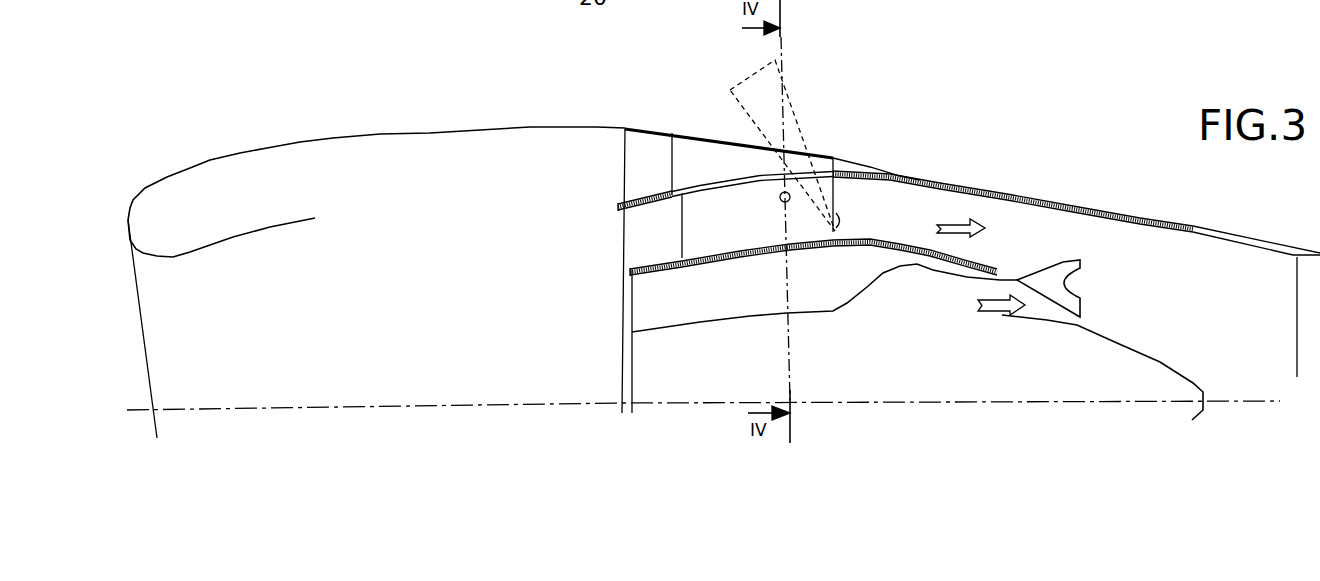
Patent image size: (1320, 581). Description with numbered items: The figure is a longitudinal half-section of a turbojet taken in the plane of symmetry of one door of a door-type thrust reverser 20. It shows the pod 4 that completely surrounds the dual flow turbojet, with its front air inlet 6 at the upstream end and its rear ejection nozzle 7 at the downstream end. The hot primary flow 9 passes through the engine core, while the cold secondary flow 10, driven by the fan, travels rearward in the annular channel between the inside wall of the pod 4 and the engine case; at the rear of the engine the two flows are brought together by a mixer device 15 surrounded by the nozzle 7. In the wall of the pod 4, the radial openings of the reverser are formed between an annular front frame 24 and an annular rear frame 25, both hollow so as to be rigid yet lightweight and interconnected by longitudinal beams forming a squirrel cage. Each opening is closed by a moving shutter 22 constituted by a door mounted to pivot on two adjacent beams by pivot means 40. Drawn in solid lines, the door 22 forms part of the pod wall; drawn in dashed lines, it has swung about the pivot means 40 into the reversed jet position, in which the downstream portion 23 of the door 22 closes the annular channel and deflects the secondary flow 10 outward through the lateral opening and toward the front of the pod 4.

The pod 4 is at (422, 132).
The front air inlet 6 is at (173, 257).
The rear ejection nozzle 7 is at (1067, 198).
The hot primary flow 9 is at (995, 312).
The cold secondary flow 10 is at (955, 222).
The mixer device 15 is at (1052, 287).
The thrust reverser 20 is at (725, 125).
The moving shutter 22 is at (797, 117).
The downstream portion of door 23 is at (825, 199).
The annular front frame 24 is at (647, 160).
The annular rear frame 25 is at (843, 165).
The pivot means 40 is at (780, 198).